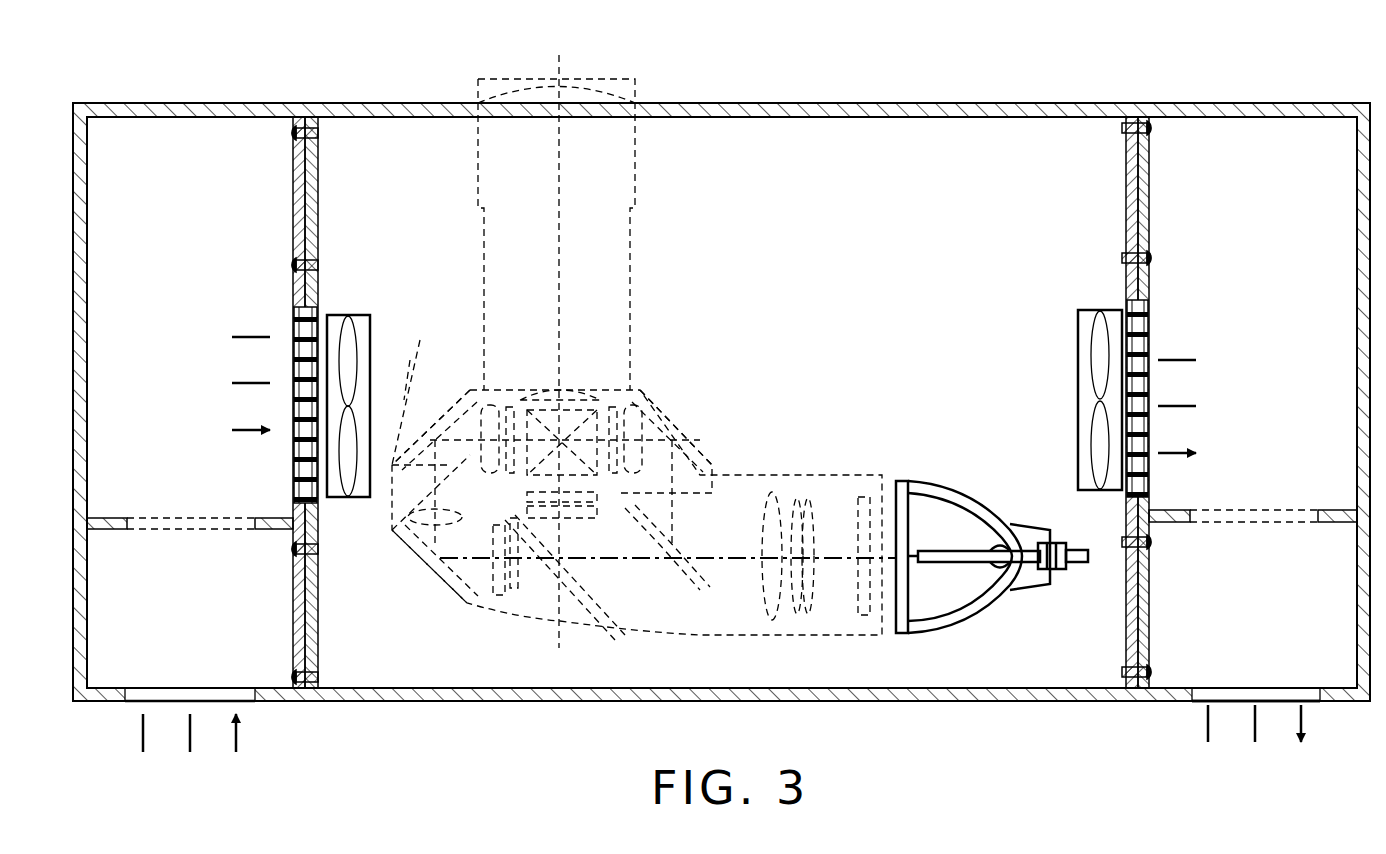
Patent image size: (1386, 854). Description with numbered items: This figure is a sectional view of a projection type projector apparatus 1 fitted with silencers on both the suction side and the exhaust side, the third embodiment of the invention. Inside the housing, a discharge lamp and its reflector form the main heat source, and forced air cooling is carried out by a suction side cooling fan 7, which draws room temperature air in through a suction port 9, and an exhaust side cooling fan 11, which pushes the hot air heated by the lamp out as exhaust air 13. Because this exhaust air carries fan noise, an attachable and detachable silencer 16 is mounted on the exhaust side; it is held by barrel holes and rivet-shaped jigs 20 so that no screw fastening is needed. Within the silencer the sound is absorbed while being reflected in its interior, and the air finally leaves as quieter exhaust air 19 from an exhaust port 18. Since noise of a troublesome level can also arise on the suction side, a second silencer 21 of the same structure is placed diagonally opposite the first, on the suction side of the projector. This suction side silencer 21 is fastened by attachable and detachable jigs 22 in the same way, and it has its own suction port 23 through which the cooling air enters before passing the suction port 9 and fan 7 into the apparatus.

The housing 1 is at (882, 103).
The fan 7 is at (364, 315).
The suction port 9 is at (290, 315).
The fan 11 is at (1090, 310).
The exhaust air 13 is at (1168, 357).
The silencer 16 is at (1246, 102).
The exhaust port 18 is at (1312, 701).
The exhaust air 19 is at (1200, 718).
The rivet-shaped jigs 20 is at (1153, 128).
The silencer 21 is at (184, 103).
The attachable/detachable jigs 22 is at (290, 133).
The suction port 23 is at (248, 701).